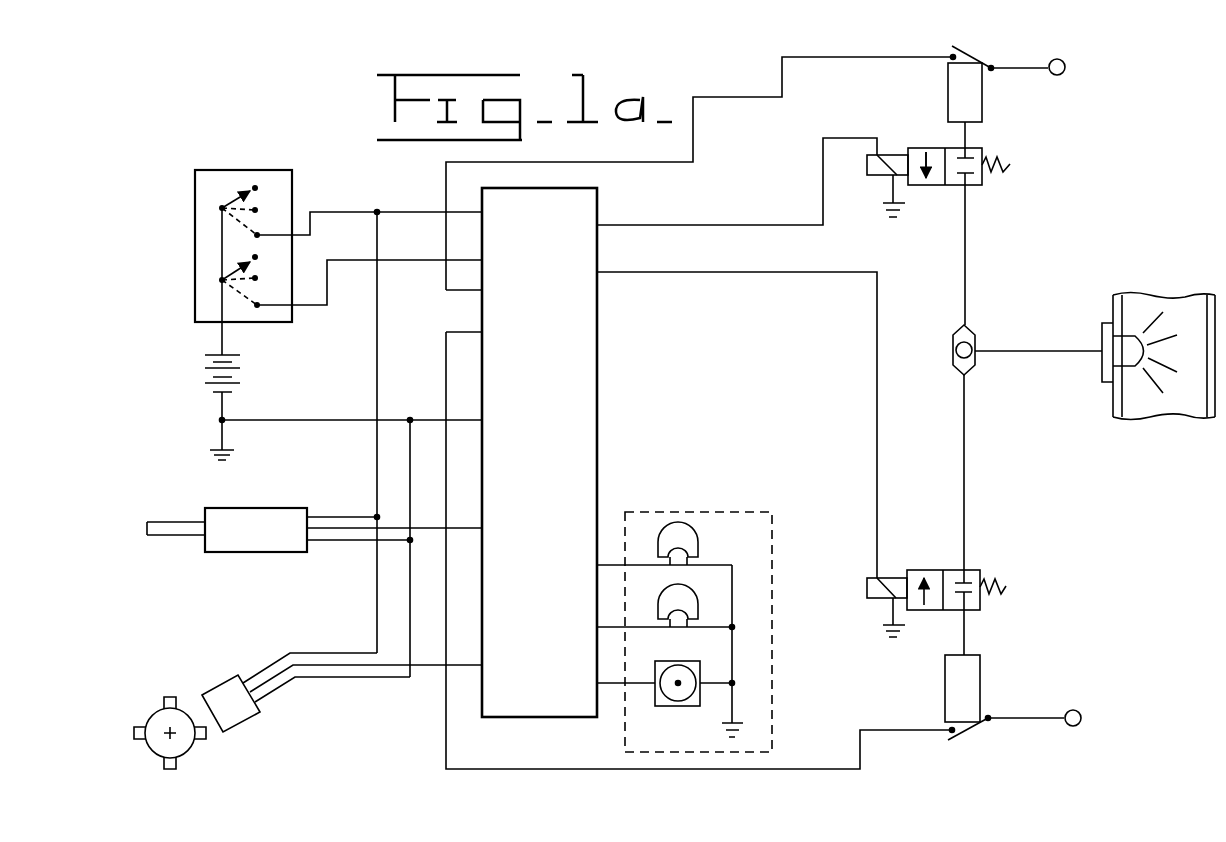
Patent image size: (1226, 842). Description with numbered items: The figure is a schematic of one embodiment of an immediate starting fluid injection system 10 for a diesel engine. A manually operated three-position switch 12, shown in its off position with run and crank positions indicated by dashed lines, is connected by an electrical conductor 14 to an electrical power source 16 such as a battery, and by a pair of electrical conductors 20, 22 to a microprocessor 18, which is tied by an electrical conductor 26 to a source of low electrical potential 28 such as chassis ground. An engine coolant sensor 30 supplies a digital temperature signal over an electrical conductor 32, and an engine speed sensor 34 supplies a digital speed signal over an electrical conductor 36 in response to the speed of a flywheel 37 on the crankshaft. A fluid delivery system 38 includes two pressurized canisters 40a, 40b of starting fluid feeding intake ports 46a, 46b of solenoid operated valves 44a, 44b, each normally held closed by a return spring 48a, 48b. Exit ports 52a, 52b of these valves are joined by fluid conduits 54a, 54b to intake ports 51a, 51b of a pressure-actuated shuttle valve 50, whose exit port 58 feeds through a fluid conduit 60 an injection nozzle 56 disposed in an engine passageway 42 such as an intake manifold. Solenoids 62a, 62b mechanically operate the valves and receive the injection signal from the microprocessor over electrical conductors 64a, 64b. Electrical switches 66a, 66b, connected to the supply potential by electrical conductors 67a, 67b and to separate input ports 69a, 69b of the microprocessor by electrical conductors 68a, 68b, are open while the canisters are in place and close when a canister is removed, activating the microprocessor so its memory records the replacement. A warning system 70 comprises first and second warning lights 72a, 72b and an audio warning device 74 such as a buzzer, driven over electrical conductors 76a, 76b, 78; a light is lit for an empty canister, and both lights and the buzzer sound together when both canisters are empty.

The immediate starting fluid injection system 10 is at (694, 82).
The three-position switch 12 is at (243, 170).
The electrical conductor 14 is at (224, 340).
The electrical power source 16 is at (251, 378).
The microprocessor 18 is at (600, 203).
The electrical conductor 20 is at (323, 212).
The electrical conductor 22 is at (354, 258).
The electrical conductor 26 is at (307, 420).
The source of low electrical potential 28 is at (237, 455).
The engine coolant sensor 30 is at (248, 508).
The electrical conductor 32 is at (350, 526).
The engine speed sensor 34 is at (254, 716).
The electrical conductor 36 is at (338, 663).
The flywheel 37 is at (193, 752).
The fluid delivery system 38 is at (1087, 183).
The pressurized canister 40a is at (948, 86).
The pressurized canister 40b is at (982, 702).
The engine passageway 42 is at (1181, 305).
The solenoid operated valve 44a is at (983, 181).
The solenoid operated valve 44b is at (982, 605).
The intake port 46a is at (970, 148).
The intake port 46b is at (962, 615).
The return spring 48a is at (1011, 165).
The return spring 48b is at (1006, 585).
The pressure-actuated shuttle valve 50 is at (952, 350).
The intake port 51a is at (962, 325).
The intake port 51b is at (962, 376).
The exit port 52a is at (967, 192).
The exit port 52b is at (962, 565).
The fluid conduit 54a is at (966, 270).
The fluid conduit 54b is at (966, 468).
The injection nozzle 56 is at (1101, 322).
The exit port 58 is at (976, 342).
The fluid conduit 60 is at (1053, 353).
The solenoid 62a is at (878, 177).
The solenoid 62b is at (868, 600).
The electrical conductor 64a is at (656, 225).
The electrical conductor 64b is at (656, 272).
The electrical switch 66a is at (970, 54).
The electrical switch 66b is at (950, 742).
The electrical conductor 67a is at (1040, 77).
The electrical conductor 67b is at (1046, 721).
The electrical conductor 68a is at (695, 135).
The electrical conductor 68b is at (710, 770).
The input port 69a is at (480, 293).
The input port 69b is at (480, 333).
The warning system 70 is at (687, 502).
The warning light 72a is at (699, 540).
The warning light 72b is at (699, 598).
The audio warning device 74 is at (686, 661).
The electrical conductor 76a is at (612, 565).
The electrical conductor 76b is at (612, 627).
The electrical conductor 78 is at (632, 683).